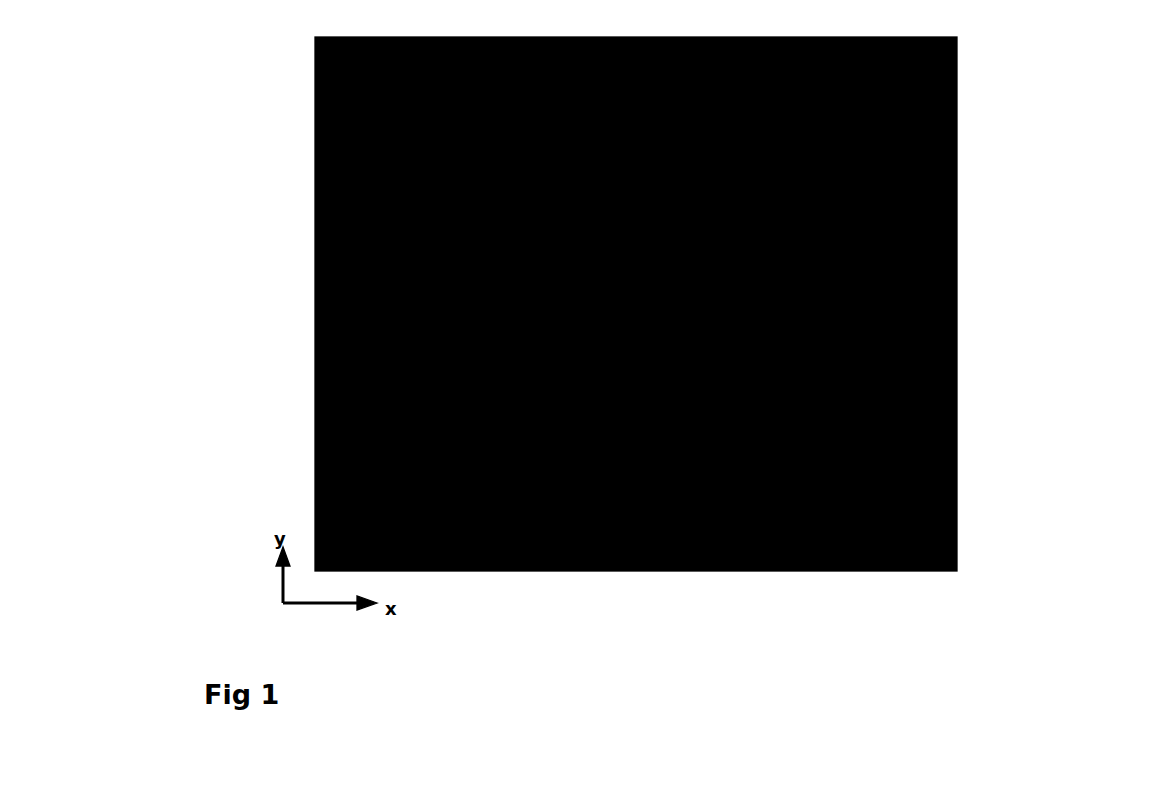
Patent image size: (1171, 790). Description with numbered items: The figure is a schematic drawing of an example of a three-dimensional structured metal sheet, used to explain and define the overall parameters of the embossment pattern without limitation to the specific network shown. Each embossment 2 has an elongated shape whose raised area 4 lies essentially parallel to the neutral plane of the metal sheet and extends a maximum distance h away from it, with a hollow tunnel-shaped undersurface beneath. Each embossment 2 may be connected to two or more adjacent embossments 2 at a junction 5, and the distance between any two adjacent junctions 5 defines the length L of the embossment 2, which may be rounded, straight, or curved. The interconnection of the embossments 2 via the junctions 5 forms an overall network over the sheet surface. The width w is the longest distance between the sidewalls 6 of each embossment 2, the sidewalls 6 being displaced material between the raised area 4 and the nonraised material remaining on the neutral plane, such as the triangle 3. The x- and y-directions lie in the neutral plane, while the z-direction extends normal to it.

The embossment 2 is at (582, 556).
The triangle 3 is at (322, 402).
The raised area 4 is at (743, 556).
The junction 5 is at (957, 237).
The sidewall 6 is at (318, 198).